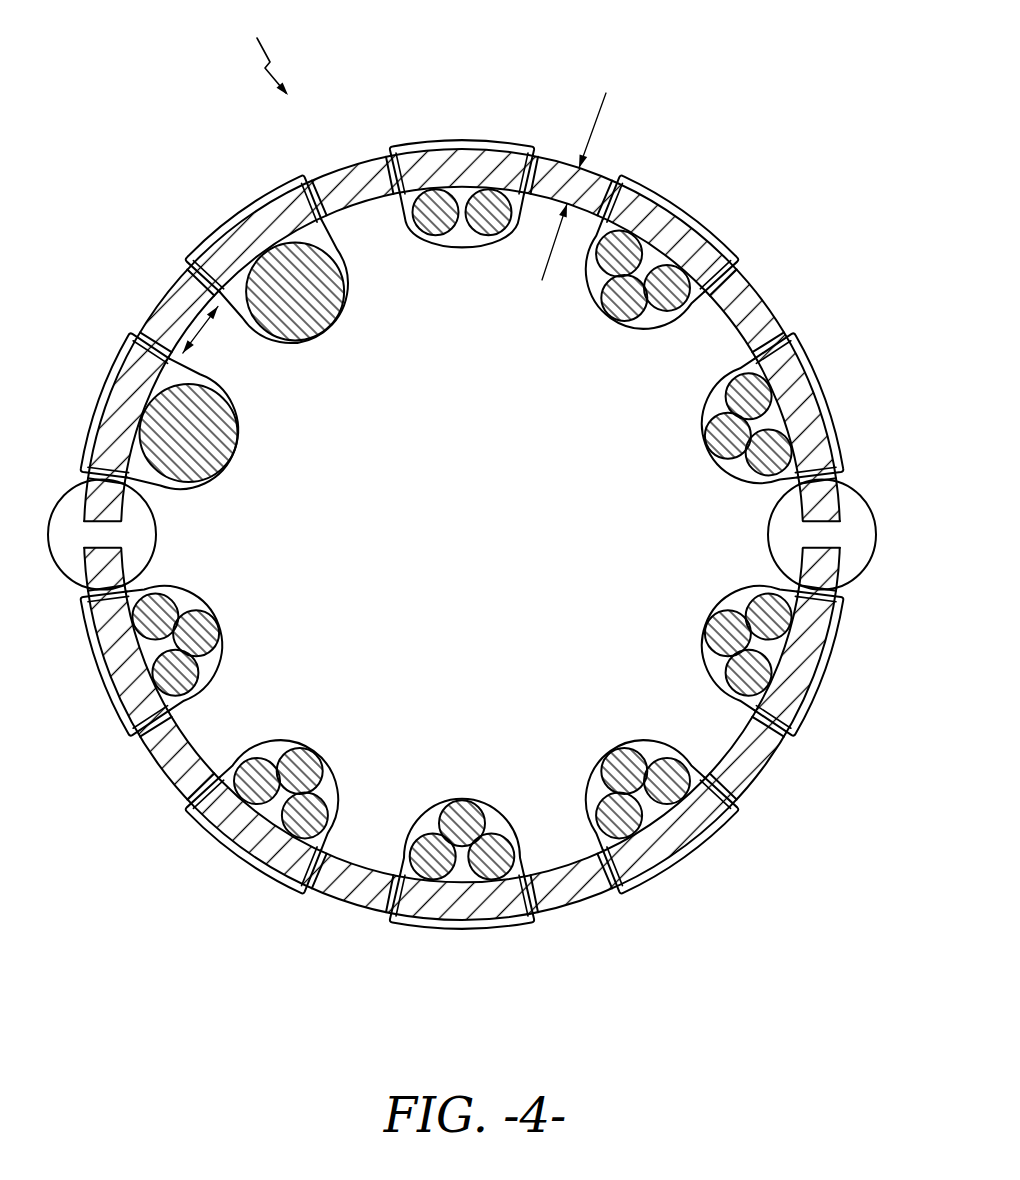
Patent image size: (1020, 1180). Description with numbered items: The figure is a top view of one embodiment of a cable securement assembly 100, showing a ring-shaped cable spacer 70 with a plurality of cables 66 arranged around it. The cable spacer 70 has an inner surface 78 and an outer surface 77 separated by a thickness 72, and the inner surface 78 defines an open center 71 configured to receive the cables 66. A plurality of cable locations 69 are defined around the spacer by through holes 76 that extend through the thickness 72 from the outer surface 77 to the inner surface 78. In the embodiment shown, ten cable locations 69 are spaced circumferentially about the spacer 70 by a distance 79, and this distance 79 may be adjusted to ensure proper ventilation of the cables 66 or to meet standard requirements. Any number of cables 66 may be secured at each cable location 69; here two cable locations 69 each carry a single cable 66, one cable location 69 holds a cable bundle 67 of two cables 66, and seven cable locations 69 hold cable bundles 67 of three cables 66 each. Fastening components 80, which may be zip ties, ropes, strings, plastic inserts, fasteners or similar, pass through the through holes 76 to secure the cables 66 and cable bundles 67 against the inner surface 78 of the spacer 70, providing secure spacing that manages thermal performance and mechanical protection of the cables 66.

The cable securement assembly 100 is at (251, 47).
The cable spacer 70 is at (158, 303).
The open center 71 is at (440, 545).
The thickness 72 is at (598, 112).
The through holes 76 is at (609, 188).
The outer surface 77 is at (242, 862).
The inner surface 78 is at (568, 865).
The distance 79 is at (202, 332).
The fastening components 80 is at (222, 228).
The cables 66 is at (318, 298).
The cable bundles 67 is at (630, 297).
The cable locations 69 is at (800, 662).